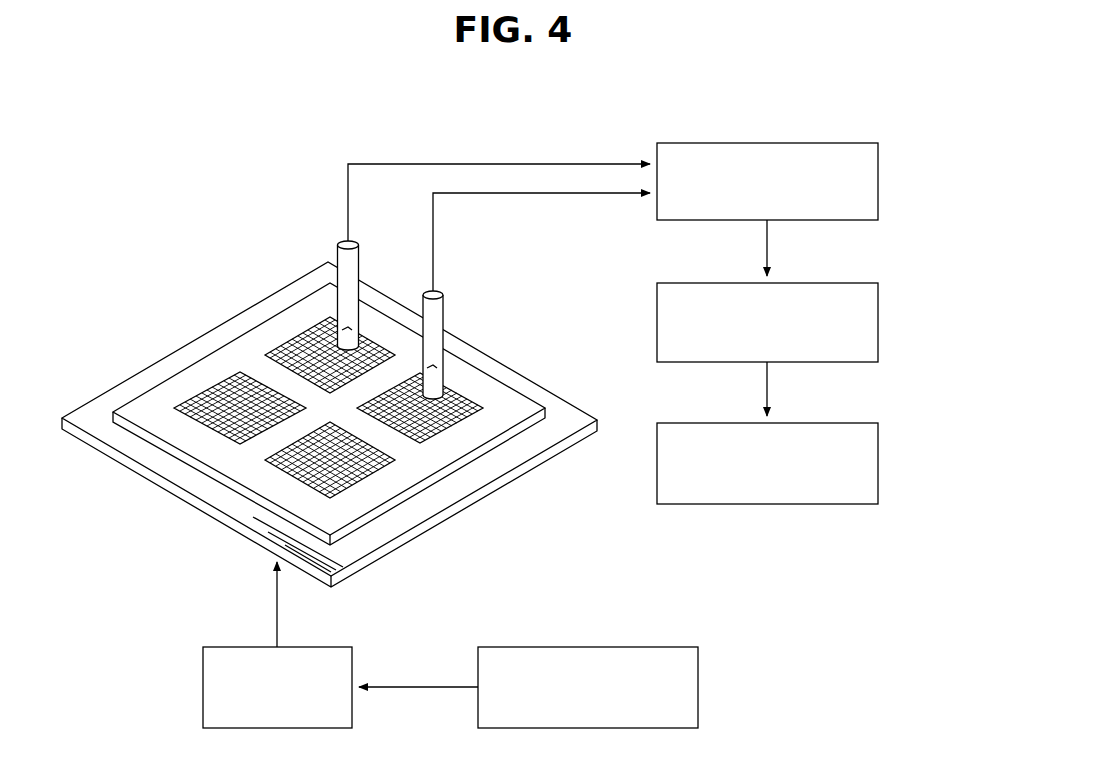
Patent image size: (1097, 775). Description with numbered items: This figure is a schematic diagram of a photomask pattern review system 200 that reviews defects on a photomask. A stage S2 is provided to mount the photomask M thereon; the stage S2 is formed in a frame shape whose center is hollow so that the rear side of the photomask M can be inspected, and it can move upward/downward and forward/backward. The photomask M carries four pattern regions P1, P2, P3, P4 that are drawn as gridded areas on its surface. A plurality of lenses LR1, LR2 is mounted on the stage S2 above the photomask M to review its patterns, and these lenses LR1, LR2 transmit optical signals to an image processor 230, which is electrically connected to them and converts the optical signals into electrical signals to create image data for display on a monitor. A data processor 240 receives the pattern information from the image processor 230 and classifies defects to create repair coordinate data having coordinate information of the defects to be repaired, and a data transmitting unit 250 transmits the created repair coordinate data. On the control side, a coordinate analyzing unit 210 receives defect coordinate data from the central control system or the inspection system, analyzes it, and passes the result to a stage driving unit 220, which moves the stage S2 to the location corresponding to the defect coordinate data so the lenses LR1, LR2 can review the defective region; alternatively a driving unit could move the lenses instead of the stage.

The photomask pattern review system 200 is at (510, 84).
The coordinate analyzing unit 210 is at (698, 688).
The stage driving unit 220 is at (203, 687).
The image processor 230 is at (878, 182).
The data processor 240 is at (878, 323).
The data transmitting unit 250 is at (878, 466).
The stage S2 is at (202, 482).
The photomask M is at (225, 352).
The pattern region P1 is at (293, 337).
The pattern region P2 is at (482, 412).
The pattern region P3 is at (202, 395).
The pattern region P4 is at (372, 475).
The lens LR1 is at (345, 260).
The lens LR2 is at (437, 306).